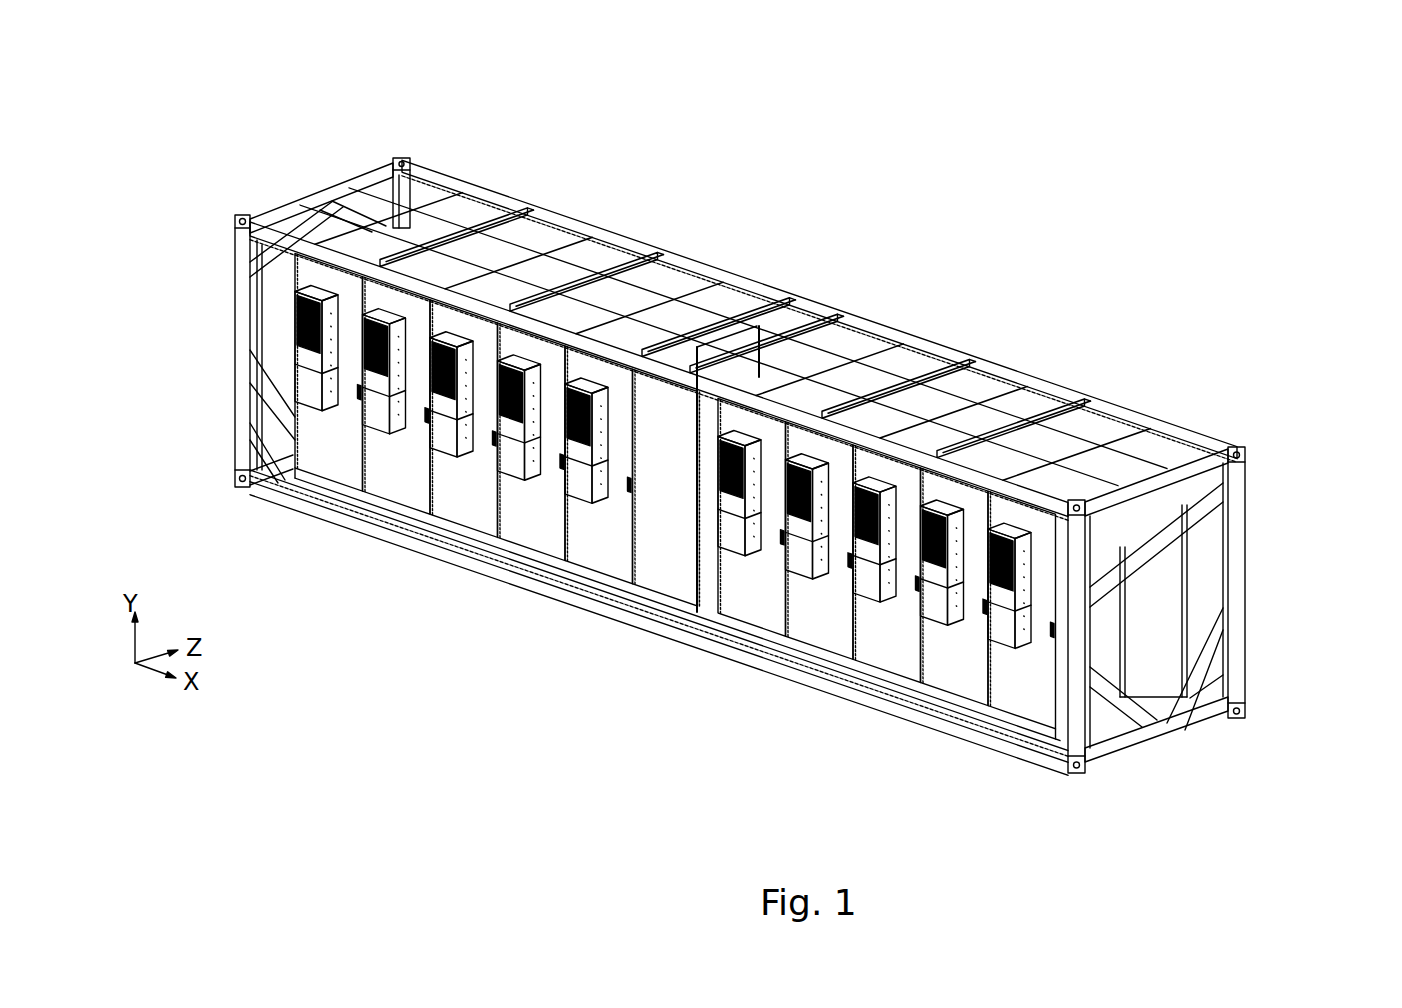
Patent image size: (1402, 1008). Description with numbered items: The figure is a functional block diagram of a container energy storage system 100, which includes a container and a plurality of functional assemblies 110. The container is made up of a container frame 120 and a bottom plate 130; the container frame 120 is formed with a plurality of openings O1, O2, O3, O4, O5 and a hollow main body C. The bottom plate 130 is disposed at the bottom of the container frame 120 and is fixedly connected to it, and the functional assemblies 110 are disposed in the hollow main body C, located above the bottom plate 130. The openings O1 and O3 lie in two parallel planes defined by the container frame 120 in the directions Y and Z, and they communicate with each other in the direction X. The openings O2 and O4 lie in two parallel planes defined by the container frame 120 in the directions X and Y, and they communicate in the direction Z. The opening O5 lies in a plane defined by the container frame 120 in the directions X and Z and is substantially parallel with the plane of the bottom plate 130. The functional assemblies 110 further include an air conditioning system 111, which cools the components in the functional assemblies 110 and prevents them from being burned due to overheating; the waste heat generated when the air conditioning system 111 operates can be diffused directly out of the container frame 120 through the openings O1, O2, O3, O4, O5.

The container energy storage system 100 is at (178, 31).
The functional assemblies 110 is at (1031, 693).
The air conditioning system 111 is at (1007, 620).
The container frame 120 is at (1170, 433).
The bottom plate 130 is at (1003, 717).
The opening O1 is at (318, 185).
The opening O2 is at (1087, 381).
The opening O3 is at (1237, 581).
The opening O4 is at (384, 519).
The opening O5 is at (725, 302).
The hollow main body C is at (658, 541).